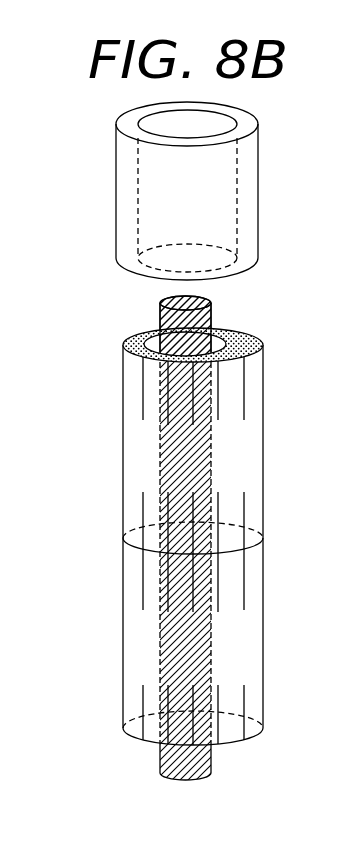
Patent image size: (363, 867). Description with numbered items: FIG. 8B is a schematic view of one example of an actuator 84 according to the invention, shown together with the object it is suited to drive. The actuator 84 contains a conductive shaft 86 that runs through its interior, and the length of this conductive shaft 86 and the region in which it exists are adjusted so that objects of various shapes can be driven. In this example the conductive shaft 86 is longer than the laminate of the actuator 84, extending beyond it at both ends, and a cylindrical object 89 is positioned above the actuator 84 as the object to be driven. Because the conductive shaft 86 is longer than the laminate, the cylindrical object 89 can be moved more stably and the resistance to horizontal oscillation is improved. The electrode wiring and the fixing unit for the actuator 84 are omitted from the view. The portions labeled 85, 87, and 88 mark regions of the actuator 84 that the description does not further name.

The actuator 84 is at (207, 832).
The lower section 85 is at (105, 677).
The conductive shaft 86 is at (167, 644).
The middle section 87 is at (105, 495).
The upper section 88 is at (105, 338).
The cylindrical object 89 is at (122, 233).